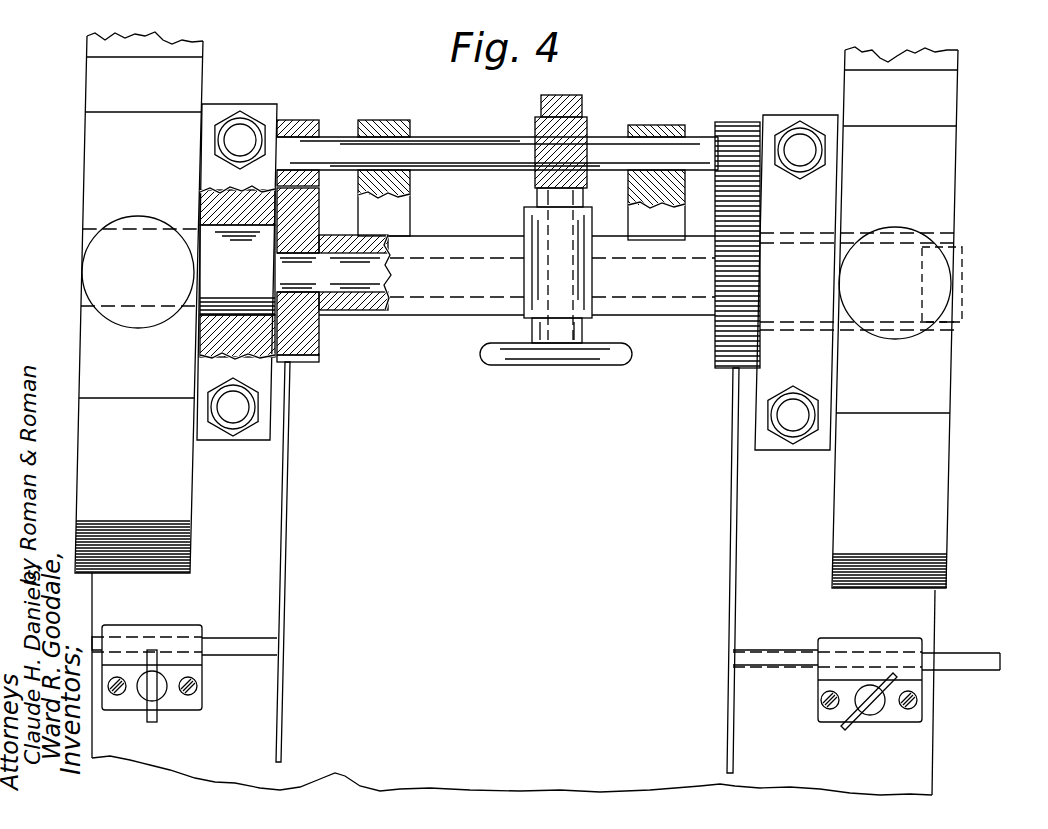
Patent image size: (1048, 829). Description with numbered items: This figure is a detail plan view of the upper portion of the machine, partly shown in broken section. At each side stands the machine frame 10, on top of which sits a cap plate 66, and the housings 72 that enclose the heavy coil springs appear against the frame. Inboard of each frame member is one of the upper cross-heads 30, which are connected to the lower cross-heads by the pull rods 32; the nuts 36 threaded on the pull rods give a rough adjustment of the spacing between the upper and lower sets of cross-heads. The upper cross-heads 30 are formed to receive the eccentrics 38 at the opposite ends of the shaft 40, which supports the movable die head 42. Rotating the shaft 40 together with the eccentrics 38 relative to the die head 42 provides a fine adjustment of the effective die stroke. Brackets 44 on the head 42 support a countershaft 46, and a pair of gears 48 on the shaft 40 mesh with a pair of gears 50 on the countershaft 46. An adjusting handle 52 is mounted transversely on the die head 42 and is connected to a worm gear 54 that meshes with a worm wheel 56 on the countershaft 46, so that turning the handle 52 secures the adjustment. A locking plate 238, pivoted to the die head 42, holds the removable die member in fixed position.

The machine frame 10 is at (516, 310).
The upper cross-heads 30 is at (263, 386).
The pull rods 32 is at (241, 137).
The nuts 36 is at (262, 420).
The eccentrics 38 is at (237, 272).
The shaft 40 is at (386, 275).
The movable die head 42 is at (455, 302).
The brackets 44 is at (414, 121).
The countershaft 46 is at (491, 141).
The gears 48 is at (318, 342).
The gears 50 is at (312, 120).
The adjusting handle 52 is at (480, 352).
The worm gear 54 is at (587, 120).
The worm wheel 56 is at (583, 97).
The cap plate 66 is at (93, 349).
The housings 72 is at (95, 285).
The locking plate 238 is at (950, 280).